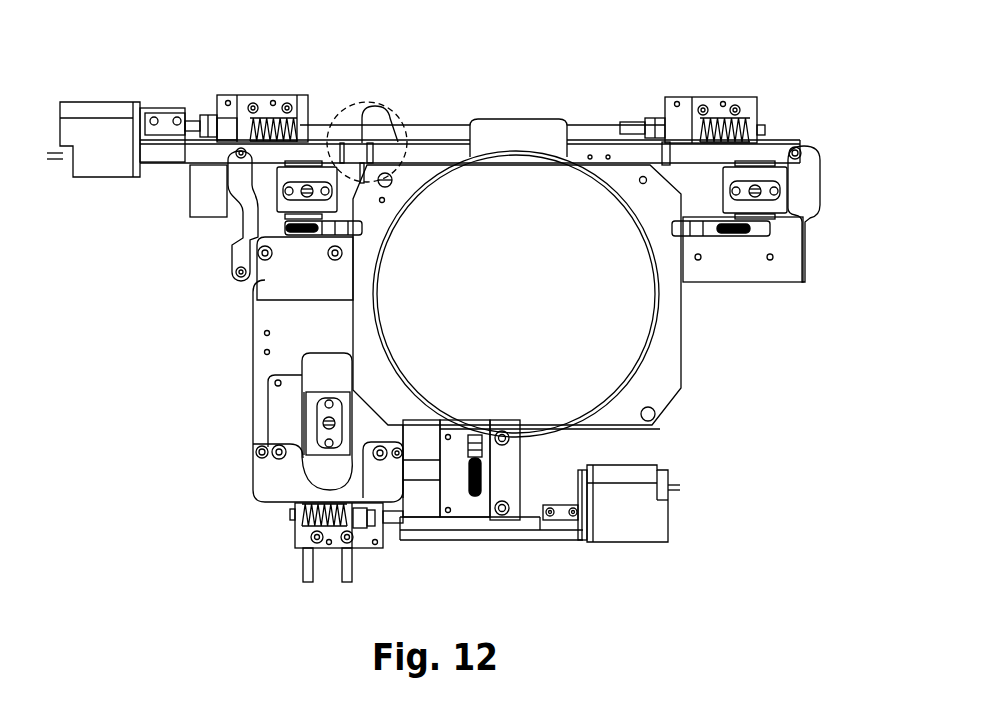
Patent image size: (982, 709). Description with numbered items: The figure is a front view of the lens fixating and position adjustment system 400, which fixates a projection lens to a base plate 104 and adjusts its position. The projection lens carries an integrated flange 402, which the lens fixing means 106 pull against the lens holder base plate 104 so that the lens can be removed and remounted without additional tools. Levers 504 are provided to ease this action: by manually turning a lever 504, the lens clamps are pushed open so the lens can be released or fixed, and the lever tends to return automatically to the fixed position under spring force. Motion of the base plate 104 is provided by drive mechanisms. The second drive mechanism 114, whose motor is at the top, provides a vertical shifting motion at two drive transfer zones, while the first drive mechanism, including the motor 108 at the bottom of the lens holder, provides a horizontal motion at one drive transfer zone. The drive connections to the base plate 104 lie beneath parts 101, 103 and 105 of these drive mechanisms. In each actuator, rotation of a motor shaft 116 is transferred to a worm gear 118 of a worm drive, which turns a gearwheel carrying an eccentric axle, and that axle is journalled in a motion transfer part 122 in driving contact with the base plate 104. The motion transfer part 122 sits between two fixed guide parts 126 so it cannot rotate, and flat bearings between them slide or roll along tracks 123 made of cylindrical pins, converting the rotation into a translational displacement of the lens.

The lens fixating and position adjustment system 400 is at (643, 58).
The flange 402 is at (683, 378).
The part of the first drive mechanism 101 is at (232, 527).
The part of the second drive mechanism 103 is at (322, 78).
The part of the second drive mechanism 105 is at (780, 110).
The base plate 104 is at (317, 303).
The lens fixing means 106 is at (682, 240).
The motor 108 is at (655, 510).
The second drive mechanism 114 is at (112, 128).
The motor shaft 116 is at (418, 524).
The worm gear 118 is at (266, 112).
The motion transfer part 122 is at (288, 178).
The track 123 is at (290, 168).
The fixed guide part 126 is at (310, 433).
The lever 504 is at (392, 110).